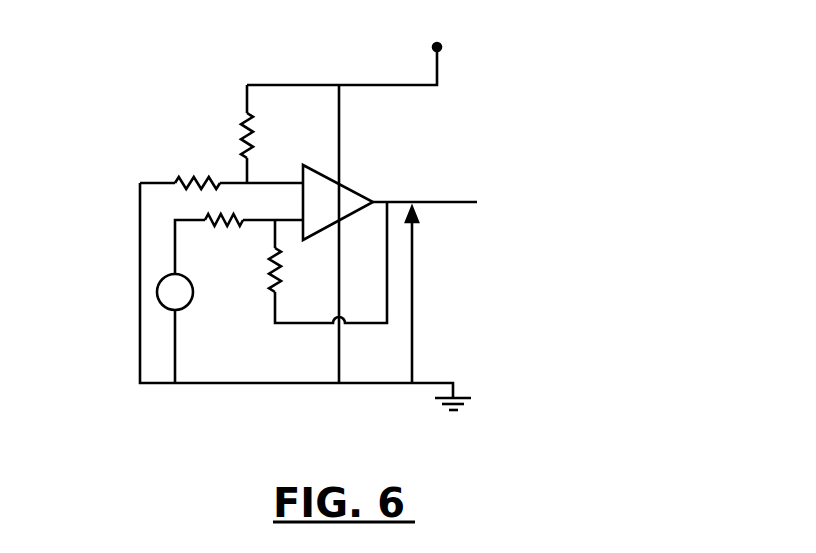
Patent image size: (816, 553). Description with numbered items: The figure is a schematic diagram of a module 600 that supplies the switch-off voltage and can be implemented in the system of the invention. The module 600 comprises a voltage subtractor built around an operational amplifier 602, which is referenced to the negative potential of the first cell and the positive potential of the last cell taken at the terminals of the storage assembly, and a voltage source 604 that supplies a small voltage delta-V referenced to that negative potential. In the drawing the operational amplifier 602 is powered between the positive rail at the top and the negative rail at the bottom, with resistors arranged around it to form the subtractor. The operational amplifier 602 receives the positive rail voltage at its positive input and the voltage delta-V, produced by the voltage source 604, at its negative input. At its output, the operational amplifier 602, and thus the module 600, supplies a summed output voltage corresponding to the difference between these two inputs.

The module 600 is at (372, 235).
The operational amplifier 602 is at (352, 193).
The voltage source 604 is at (157, 292).